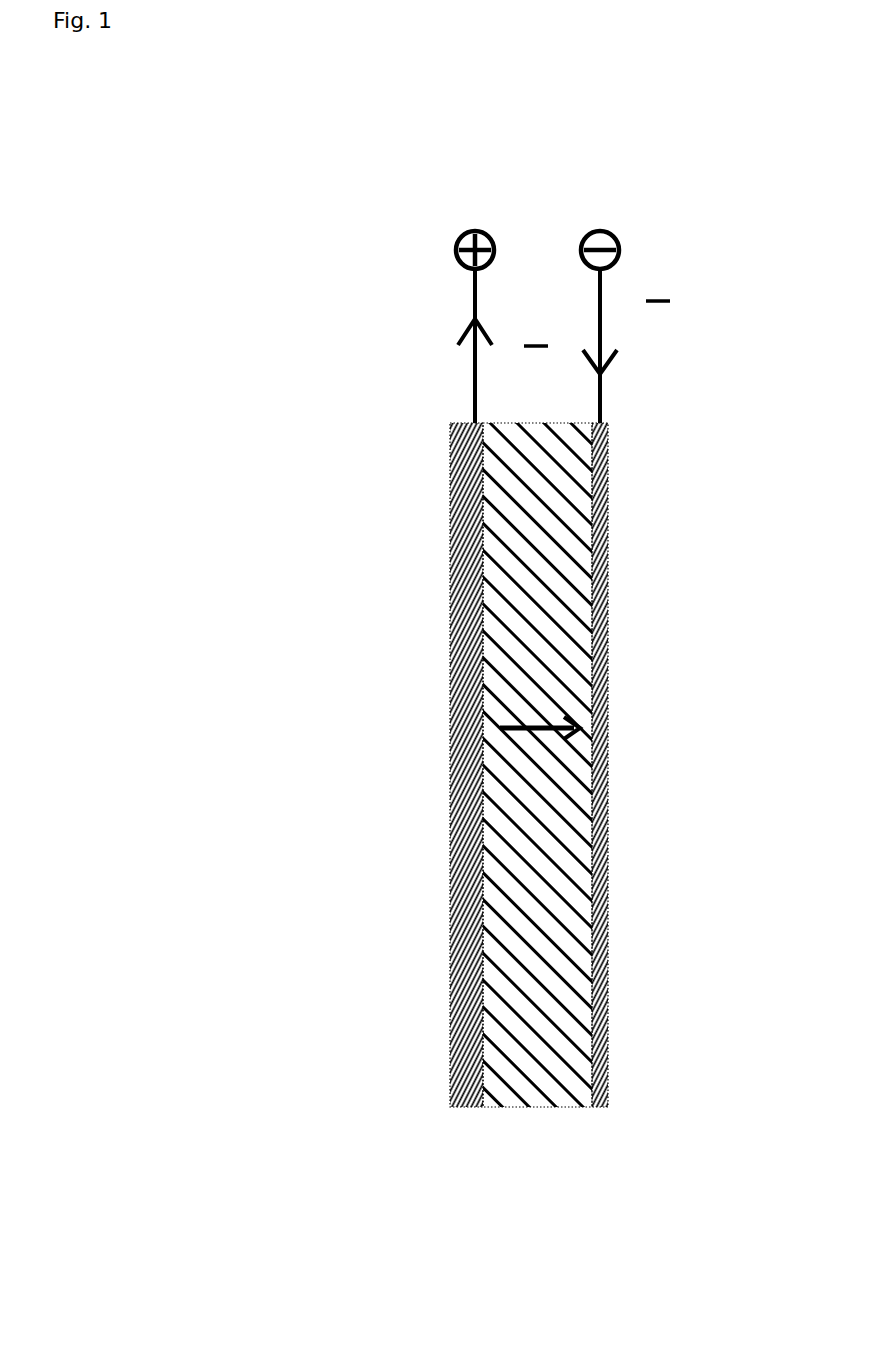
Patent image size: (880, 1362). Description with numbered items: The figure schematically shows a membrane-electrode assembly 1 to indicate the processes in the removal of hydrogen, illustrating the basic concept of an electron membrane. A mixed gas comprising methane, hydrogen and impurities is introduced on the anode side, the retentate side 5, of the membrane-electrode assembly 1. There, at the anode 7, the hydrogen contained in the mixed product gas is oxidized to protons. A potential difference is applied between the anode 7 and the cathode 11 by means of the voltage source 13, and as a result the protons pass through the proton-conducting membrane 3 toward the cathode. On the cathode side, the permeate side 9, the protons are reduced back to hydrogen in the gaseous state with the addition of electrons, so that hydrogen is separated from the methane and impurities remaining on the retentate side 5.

The membrane-electrode assembly 1 is at (555, 856).
The proton-conducting membrane 3 is at (537, 765).
The retentate side 5 is at (376, 652).
The anode 7 is at (450, 992).
The permeate side 9 is at (674, 620).
The cathode 11 is at (610, 1000).
The voltage source 13 is at (650, 222).